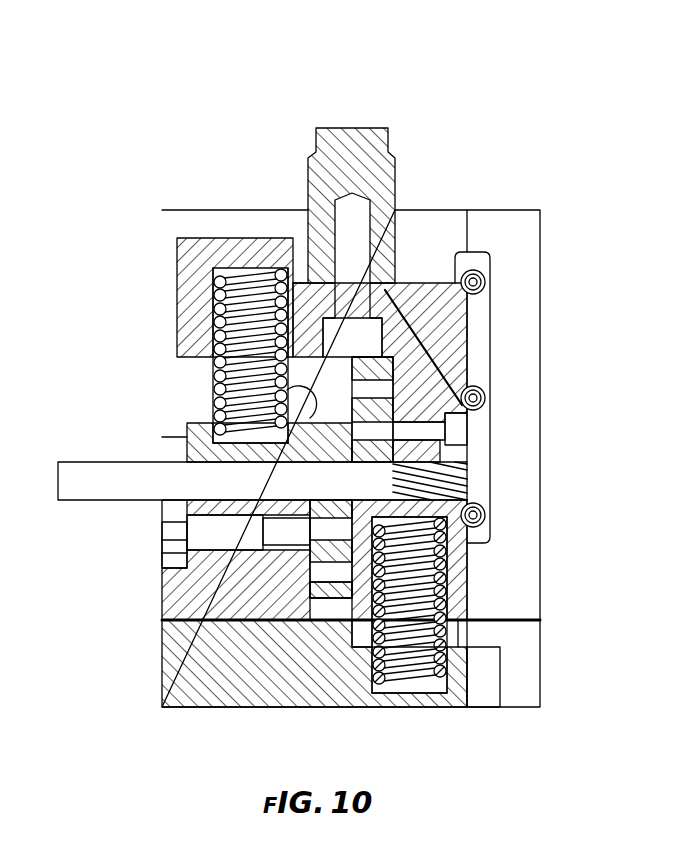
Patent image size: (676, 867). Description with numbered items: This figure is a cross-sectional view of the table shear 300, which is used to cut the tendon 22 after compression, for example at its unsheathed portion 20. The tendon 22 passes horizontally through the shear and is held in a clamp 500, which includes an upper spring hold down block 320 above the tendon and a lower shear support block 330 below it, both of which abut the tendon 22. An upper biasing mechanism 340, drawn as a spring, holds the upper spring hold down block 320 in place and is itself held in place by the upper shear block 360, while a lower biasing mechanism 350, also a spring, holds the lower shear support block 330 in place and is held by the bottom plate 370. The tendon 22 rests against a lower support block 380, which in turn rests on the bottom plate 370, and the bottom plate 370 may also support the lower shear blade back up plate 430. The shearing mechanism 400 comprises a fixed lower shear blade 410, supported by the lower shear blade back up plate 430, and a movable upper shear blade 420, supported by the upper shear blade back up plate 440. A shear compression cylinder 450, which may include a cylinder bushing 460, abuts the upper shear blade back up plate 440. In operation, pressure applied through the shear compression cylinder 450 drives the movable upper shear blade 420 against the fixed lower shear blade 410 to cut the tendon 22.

The table shear 300 is at (150, 168).
The cylinder bushing 460 is at (357, 128).
The shear compression cylinder 450 is at (400, 182).
The upper biasing mechanism 340 is at (252, 277).
The upper shear block 360 is at (417, 293).
The upper shear blade back up plate 440 is at (385, 368).
The shearing mechanism 400 is at (503, 347).
The movable upper shear blade 420 is at (413, 408).
The unsheathed portion 20 is at (470, 470).
The clamp 500 is at (512, 457).
The upper spring hold down block 320 is at (182, 420).
The tendon 22 is at (127, 473).
The fixed lower shear blade 410 is at (330, 508).
The lower shear support block 330 is at (472, 550).
The lower support block 380 is at (215, 580).
The lower biasing mechanism 350 is at (467, 610).
The bottom plate 370 is at (283, 680).
The lower shear blade back up plate 430 is at (328, 595).